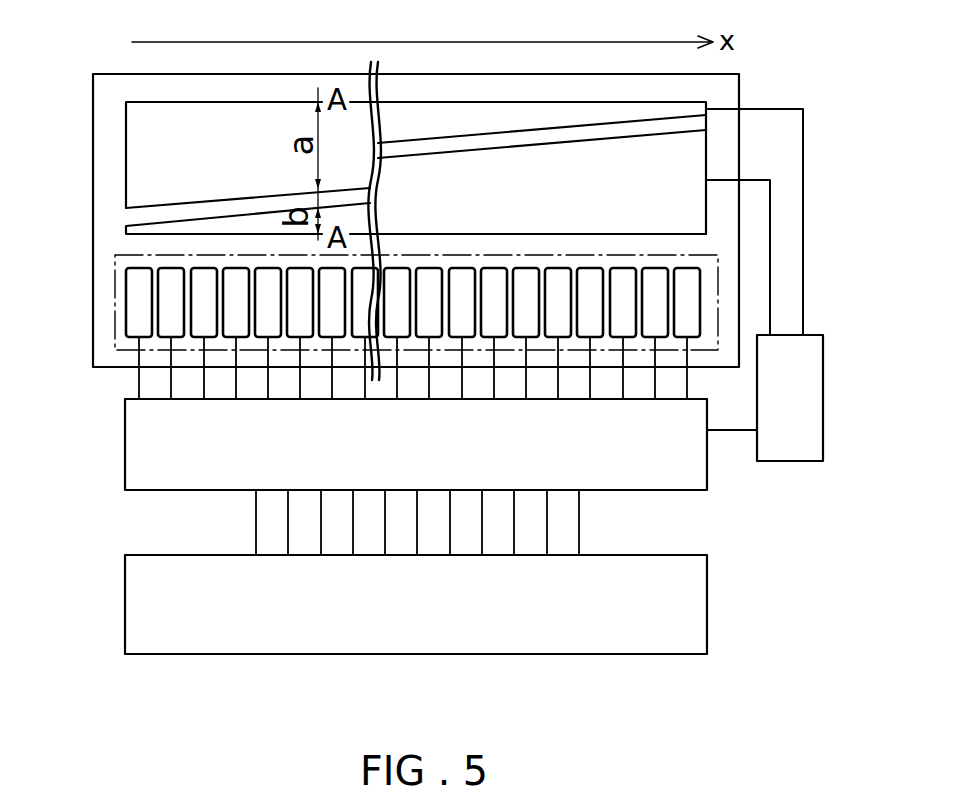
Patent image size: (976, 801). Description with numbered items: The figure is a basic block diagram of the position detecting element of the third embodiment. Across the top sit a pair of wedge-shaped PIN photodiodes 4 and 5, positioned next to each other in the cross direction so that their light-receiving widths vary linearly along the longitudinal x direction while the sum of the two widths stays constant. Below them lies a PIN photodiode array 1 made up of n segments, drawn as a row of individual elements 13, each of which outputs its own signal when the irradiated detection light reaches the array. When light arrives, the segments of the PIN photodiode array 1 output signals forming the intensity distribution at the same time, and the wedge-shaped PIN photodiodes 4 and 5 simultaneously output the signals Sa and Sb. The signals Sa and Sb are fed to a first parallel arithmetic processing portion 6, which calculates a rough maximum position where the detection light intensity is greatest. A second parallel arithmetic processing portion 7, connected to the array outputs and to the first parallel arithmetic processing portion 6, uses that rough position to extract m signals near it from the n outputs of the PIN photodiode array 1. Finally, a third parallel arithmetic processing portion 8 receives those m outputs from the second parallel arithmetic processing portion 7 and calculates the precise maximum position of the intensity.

The PIN photodiode array 1 is at (363, 331).
The recording elements 13 is at (202, 331).
The wedge-shaped PIN photodiode 4 is at (174, 110).
The wedge-shaped PIN photodiode 5 is at (126, 227).
The first parallel arithmetic processing portion 6 is at (787, 452).
The second parallel arithmetic processing portion 7 is at (137, 452).
The third parallel arithmetic processing portion 8 is at (140, 598).
The signal Sa is at (803, 140).
The signal Sb is at (760, 180).